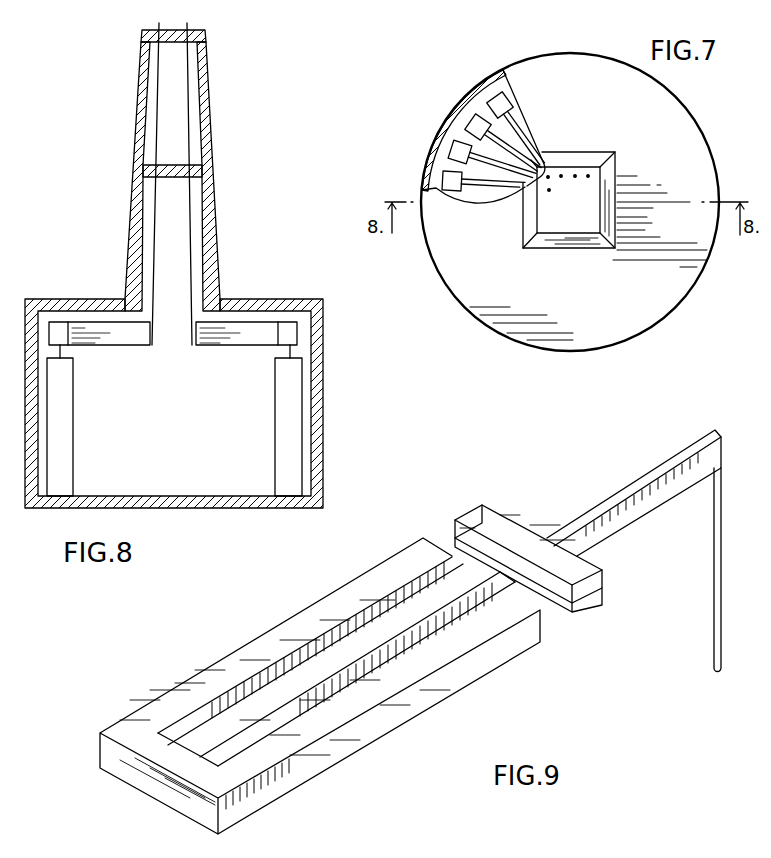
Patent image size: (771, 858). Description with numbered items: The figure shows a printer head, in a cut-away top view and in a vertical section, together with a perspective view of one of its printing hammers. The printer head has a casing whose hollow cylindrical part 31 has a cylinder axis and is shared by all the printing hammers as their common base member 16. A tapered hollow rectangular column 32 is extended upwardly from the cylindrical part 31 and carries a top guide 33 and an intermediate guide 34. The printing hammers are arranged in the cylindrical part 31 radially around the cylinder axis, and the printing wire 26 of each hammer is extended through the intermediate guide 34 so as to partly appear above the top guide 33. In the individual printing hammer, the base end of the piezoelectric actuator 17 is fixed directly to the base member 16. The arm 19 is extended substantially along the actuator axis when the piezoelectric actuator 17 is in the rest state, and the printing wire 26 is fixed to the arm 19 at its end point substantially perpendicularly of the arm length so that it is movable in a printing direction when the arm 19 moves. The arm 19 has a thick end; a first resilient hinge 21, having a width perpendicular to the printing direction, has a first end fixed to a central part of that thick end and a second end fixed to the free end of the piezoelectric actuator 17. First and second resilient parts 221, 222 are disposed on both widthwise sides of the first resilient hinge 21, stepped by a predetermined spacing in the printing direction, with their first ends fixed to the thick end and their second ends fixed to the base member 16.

In FIG. 9, the base member 16 is at (350, 750).
In FIG. 8, the piezoelectric actuator 17 is at (67, 440).
In FIG. 9, the piezoelectric actuator 17 is at (364, 656).
In FIG. 8, the arm 19 is at (118, 334).
In FIG. 7, the arm 19 is at (492, 190).
In FIG. 9, the arm 19 is at (613, 508).
In FIG. 9, the first resilient hinge 21 is at (507, 582).
In FIG. 9, the first resilient part 221 is at (450, 548).
In FIG. 9, the second resilient part 222 is at (552, 607).
In FIG. 8, the printing wire 26 is at (192, 267).
In FIG. 7, the printing wire 26 is at (562, 172).
In FIG. 9, the printing wire 26 is at (713, 538).
In FIG. 8, the hollow cylindrical part 31 is at (297, 280).
In FIG. 7, the hollow cylindrical part 31 is at (582, 296).
In FIG. 8, the tapered hollow rectangular column 32 is at (212, 130).
In FIG. 8, the top guide 33 is at (194, 31).
In FIG. 7, the top guide 33 is at (590, 223).
In FIG. 8, the intermediate guide 34 is at (178, 176).